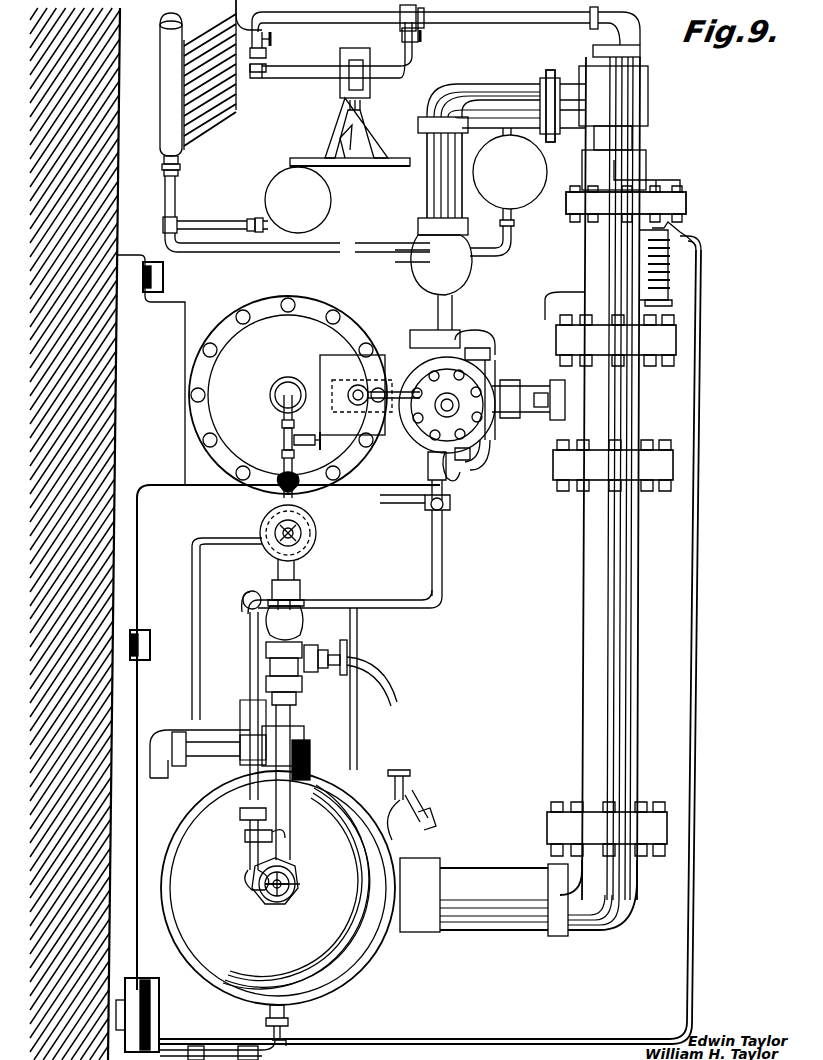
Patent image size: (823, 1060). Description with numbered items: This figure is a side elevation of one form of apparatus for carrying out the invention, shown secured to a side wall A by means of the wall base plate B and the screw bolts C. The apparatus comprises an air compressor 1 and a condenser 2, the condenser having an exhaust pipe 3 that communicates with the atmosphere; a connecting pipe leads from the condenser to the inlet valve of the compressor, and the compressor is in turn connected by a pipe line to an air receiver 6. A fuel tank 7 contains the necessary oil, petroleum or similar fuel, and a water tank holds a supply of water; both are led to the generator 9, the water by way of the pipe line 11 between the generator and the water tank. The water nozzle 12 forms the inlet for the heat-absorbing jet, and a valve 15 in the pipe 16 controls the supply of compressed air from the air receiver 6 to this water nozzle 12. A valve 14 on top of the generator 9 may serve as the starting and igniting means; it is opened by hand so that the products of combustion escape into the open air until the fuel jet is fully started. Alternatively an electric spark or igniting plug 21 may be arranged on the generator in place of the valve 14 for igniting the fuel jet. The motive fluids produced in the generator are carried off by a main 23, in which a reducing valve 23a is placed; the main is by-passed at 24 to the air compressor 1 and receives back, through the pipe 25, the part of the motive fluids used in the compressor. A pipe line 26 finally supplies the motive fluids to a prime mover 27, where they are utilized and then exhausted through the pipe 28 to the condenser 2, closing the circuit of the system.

The air compressor 1 is at (250, 414).
The condenser 2 is at (200, 100).
The exhaust pipe 3 is at (170, 65).
The air receiver 6 is at (336, 545).
The fuel tank 7 is at (508, 192).
The generator 9 is at (312, 962).
The pipe line 11 is at (440, 548).
The water nozzle 12 is at (258, 900).
The valve 14 is at (300, 690).
The valve 15 is at (298, 645).
The pipe 16 is at (275, 808).
The electric spark or igniting plug 21 is at (430, 812).
The main 23 is at (645, 110).
The reducing valve 23a is at (600, 253).
The by-pass 24 is at (520, 414).
The pipe 25 is at (432, 188).
The pipe line 26 is at (527, 12).
The prime mover 27 is at (360, 82).
The pipe 28 is at (310, 70).
The side wall A is at (108, 214).
The wall base plate B is at (130, 352).
The screw bolts C is at (163, 278).